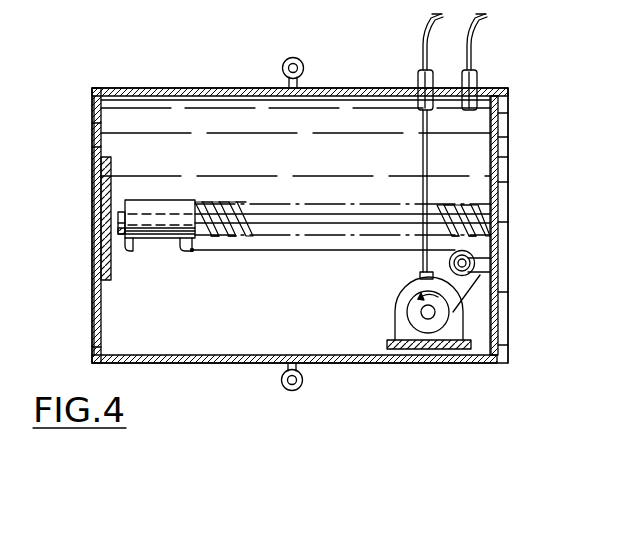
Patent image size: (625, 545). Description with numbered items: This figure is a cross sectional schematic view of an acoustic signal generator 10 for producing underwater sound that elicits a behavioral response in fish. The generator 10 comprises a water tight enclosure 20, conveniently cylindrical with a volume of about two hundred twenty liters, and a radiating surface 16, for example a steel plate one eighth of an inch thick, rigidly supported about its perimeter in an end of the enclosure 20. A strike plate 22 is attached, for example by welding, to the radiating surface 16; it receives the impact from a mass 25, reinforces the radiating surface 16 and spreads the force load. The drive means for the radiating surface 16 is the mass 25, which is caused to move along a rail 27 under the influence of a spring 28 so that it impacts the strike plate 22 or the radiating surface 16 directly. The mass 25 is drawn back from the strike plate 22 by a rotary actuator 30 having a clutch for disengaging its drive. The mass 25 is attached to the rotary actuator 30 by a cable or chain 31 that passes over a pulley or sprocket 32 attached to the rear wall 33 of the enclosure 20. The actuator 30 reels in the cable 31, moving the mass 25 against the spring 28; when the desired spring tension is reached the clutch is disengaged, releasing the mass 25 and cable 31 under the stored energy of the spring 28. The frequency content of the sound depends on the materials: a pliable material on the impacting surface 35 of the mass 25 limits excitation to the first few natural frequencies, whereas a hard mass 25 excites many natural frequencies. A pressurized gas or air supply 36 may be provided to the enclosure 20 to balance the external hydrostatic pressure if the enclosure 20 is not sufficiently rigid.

The acoustic signal generator 10 is at (484, 372).
The radiating surface 16 is at (92, 131).
The water tight enclosure 20 is at (506, 198).
The strike plate 22 is at (109, 278).
The mass 25 is at (158, 207).
The rail 27 is at (266, 218).
The spring 28 is at (212, 207).
The rotary actuator 30 is at (398, 320).
The cable or chain 31 is at (295, 252).
The pulley or sprocket 32 is at (468, 262).
The rear wall 33 is at (500, 292).
The impacting surface 35 is at (124, 242).
The pressurized gas or air supply 36 is at (478, 82).